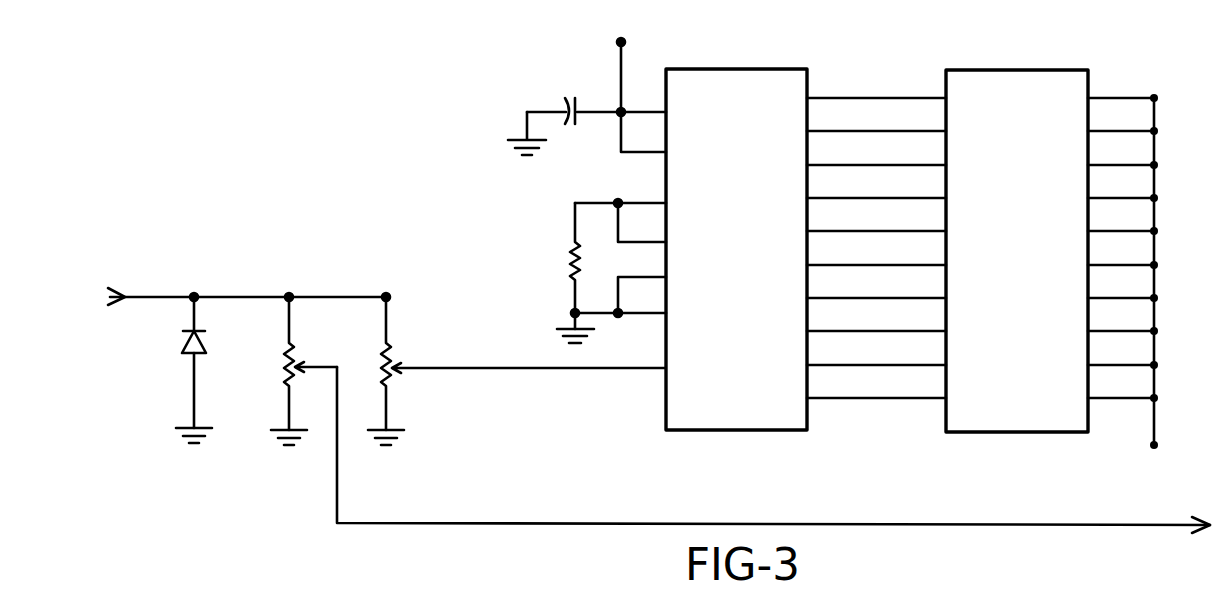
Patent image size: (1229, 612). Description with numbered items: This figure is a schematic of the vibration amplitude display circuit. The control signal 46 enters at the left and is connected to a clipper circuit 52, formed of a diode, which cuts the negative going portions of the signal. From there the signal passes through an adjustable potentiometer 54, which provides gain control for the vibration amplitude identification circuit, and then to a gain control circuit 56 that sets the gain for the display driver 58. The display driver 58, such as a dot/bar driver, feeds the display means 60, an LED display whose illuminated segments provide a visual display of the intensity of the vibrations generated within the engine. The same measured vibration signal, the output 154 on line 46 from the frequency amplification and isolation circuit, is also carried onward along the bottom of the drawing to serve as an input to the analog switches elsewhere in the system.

The control signal 46 is at (157, 267).
The clipper circuit 52 is at (182, 345).
The adjustable potentiometer 54 is at (282, 376).
The gain control circuit 56 is at (393, 358).
The display driver 58 is at (700, 69).
The display means 60 is at (998, 71).
The output 154 is at (935, 526).